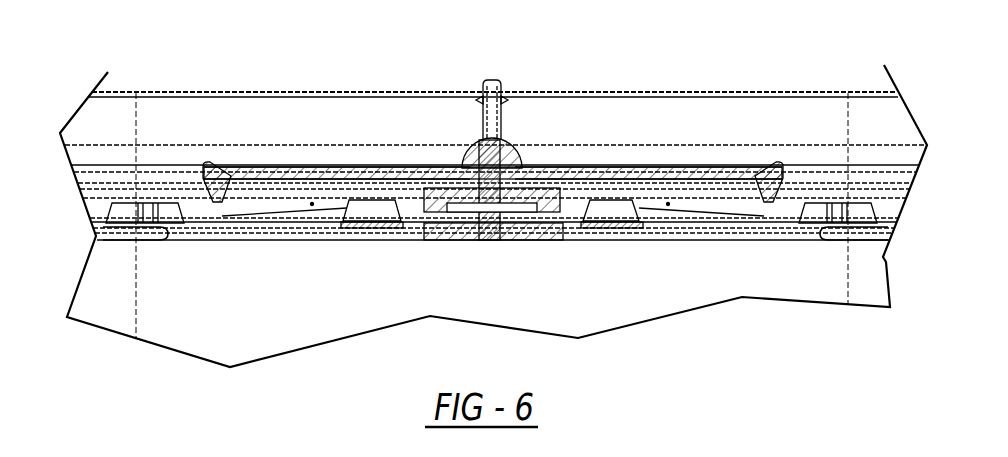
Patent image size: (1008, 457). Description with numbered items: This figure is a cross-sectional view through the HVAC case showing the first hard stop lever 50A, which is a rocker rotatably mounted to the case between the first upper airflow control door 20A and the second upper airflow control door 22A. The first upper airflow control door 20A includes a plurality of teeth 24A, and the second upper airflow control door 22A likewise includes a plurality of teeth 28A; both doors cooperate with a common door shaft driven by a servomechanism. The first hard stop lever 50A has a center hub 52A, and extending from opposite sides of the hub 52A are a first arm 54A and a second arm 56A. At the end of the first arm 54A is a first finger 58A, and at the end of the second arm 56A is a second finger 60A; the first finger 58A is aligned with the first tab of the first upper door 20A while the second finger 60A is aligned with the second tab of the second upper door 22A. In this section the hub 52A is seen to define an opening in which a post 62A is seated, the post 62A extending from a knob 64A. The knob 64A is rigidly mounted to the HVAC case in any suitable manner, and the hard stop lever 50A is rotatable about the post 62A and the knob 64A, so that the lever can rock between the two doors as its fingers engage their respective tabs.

The first upper airflow control door 20A is at (99, 212).
The second upper airflow control door 22A is at (792, 221).
The teeth 24A is at (369, 207).
The teeth 28A is at (609, 207).
The first hard stop lever 50A is at (369, 167).
The center hub 52A is at (506, 137).
The first arm 54A is at (283, 173).
The second arm 56A is at (680, 173).
The first finger 58A is at (218, 195).
The second finger 60A is at (768, 192).
The post 62A is at (492, 140).
The knob 64A is at (497, 175).